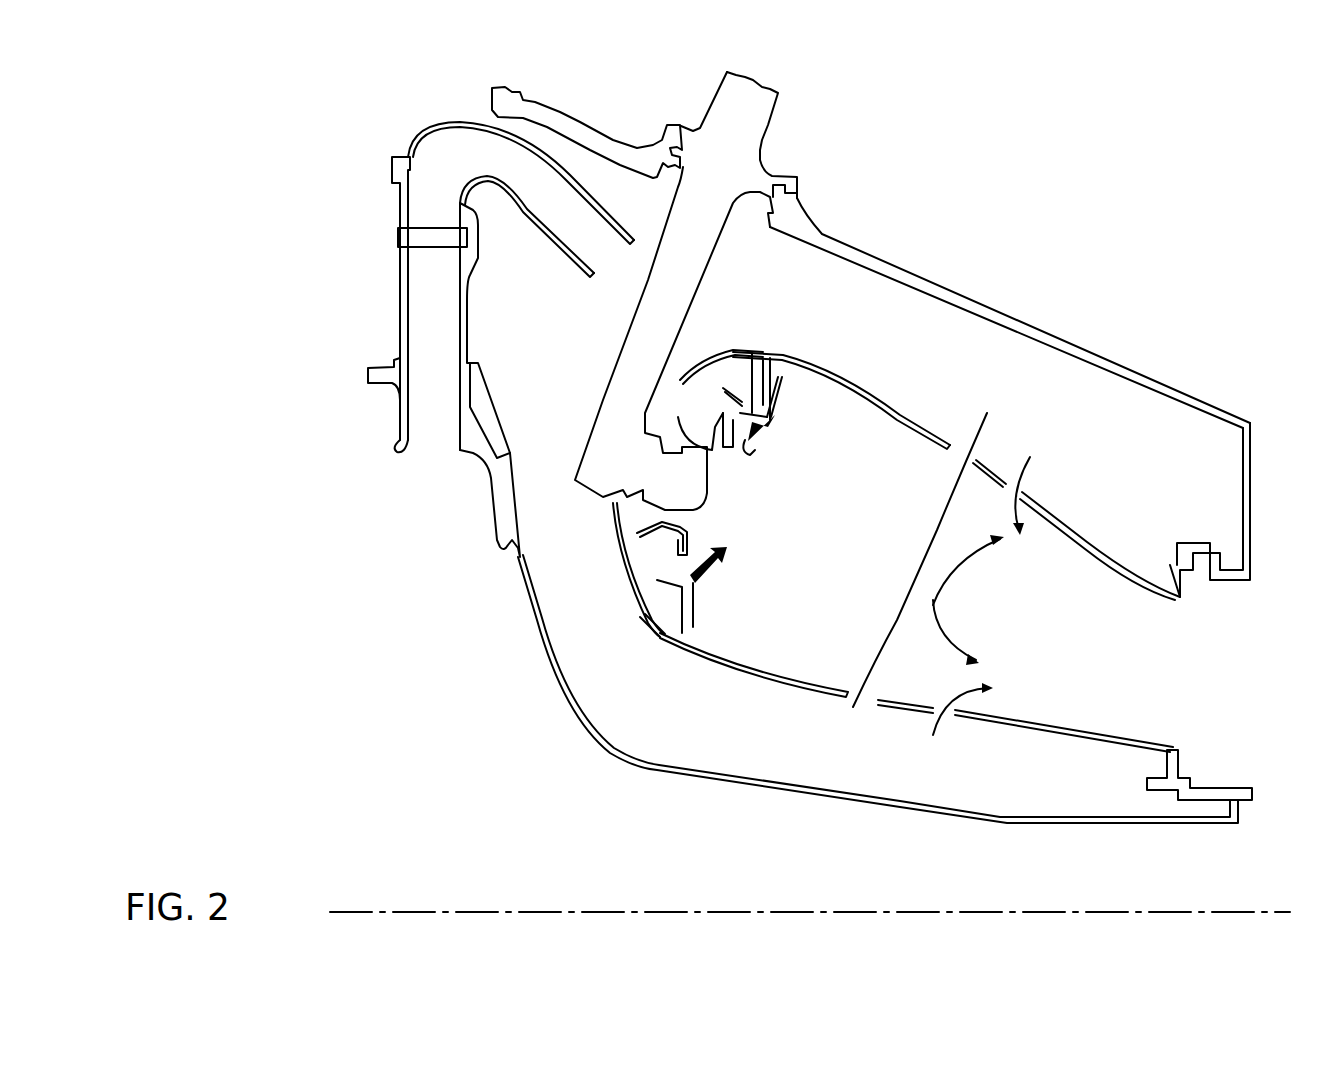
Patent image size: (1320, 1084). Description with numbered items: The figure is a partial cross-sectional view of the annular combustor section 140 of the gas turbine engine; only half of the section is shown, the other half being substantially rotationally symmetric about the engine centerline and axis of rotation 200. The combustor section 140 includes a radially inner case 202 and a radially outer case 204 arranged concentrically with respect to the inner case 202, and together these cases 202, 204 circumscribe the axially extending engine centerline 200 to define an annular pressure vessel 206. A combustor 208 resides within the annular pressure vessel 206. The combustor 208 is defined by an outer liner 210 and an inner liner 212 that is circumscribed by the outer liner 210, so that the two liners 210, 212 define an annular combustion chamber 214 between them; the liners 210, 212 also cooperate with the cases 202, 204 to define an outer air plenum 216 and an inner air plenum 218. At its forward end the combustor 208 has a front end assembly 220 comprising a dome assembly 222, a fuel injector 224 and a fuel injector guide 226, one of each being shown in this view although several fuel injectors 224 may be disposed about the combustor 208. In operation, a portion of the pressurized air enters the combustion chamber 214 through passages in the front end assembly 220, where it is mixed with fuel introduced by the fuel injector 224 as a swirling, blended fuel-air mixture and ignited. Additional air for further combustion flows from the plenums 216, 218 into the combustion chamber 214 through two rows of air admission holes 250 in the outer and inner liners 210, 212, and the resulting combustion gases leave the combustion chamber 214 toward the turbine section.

The combustor section 140 is at (318, 195).
The centerline and axis of rotation 200 is at (381, 908).
The radially inner case 202 is at (708, 783).
The radially outer case 204 is at (905, 276).
The annular pressure vessel 206 is at (597, 718).
The combustor 208 is at (742, 681).
The outer liner 210 is at (812, 343).
The inner liner 212 is at (815, 693).
The annular combustion chamber 214 is at (775, 621).
The outer air plenum 216 is at (1180, 463).
The inner air plenum 218 is at (684, 707).
The front end assembly 220 is at (602, 374).
The dome assembly 222 is at (613, 550).
The fuel injector 224 is at (600, 418).
The fuel injector guide 226 is at (703, 440).
The air admission holes 250 is at (972, 458).